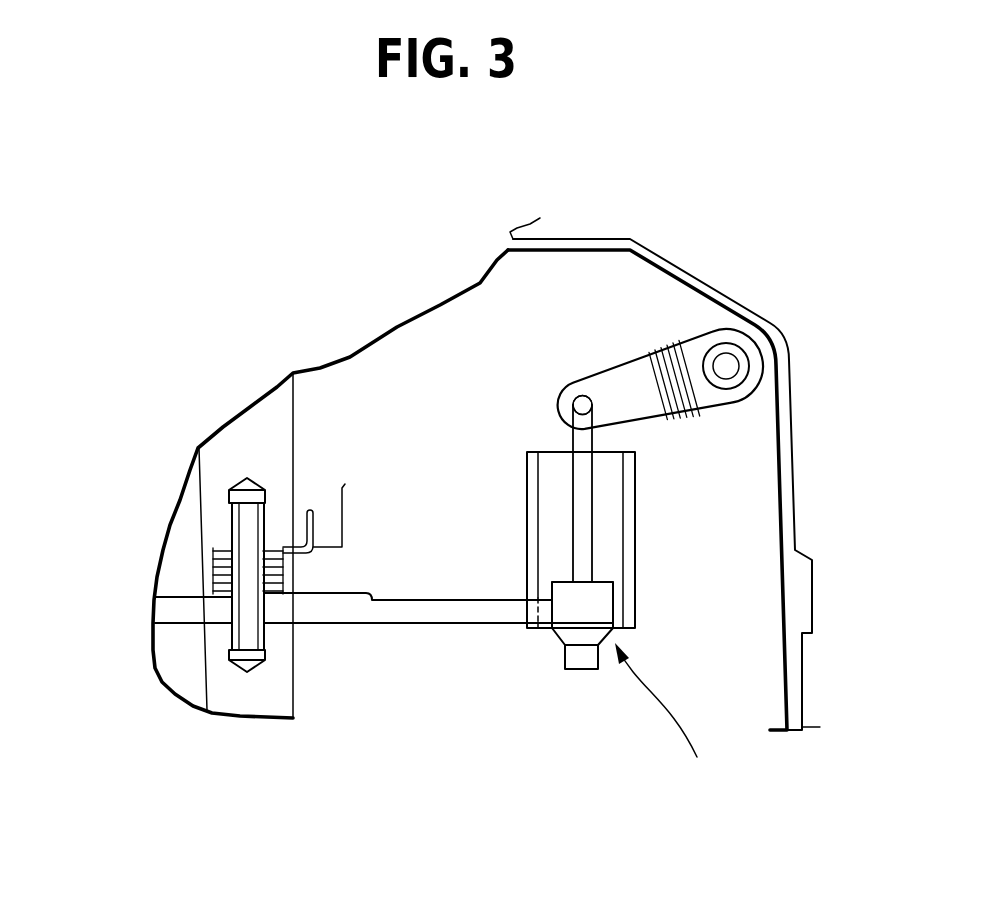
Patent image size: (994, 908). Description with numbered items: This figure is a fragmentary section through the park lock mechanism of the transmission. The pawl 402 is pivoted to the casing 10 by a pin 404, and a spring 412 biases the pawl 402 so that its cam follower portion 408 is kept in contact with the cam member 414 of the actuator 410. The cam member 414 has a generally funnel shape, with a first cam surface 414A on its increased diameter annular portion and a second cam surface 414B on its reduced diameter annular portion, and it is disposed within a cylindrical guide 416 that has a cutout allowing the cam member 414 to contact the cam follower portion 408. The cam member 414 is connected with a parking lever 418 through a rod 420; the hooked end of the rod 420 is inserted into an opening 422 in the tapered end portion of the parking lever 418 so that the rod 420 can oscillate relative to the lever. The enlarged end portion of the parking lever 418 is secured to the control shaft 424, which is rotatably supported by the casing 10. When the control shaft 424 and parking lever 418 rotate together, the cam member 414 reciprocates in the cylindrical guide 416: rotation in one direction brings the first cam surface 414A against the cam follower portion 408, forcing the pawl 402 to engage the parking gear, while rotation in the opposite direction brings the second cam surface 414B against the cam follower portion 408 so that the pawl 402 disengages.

The casing 10 is at (680, 267).
The pawl 402 is at (437, 613).
The pin 404 is at (243, 632).
The cam follower portion 408 is at (598, 610).
The actuator 410 is at (668, 720).
The spring 412 is at (222, 576).
The cam member 414 is at (590, 582).
The first cam surface 414A is at (562, 588).
The second cam surface 414B is at (573, 657).
The cylindrical guide 416 is at (527, 477).
The parking lever 418 is at (635, 372).
The rod 420 is at (582, 513).
The opening 422 is at (583, 388).
The control shaft 424 is at (727, 364).